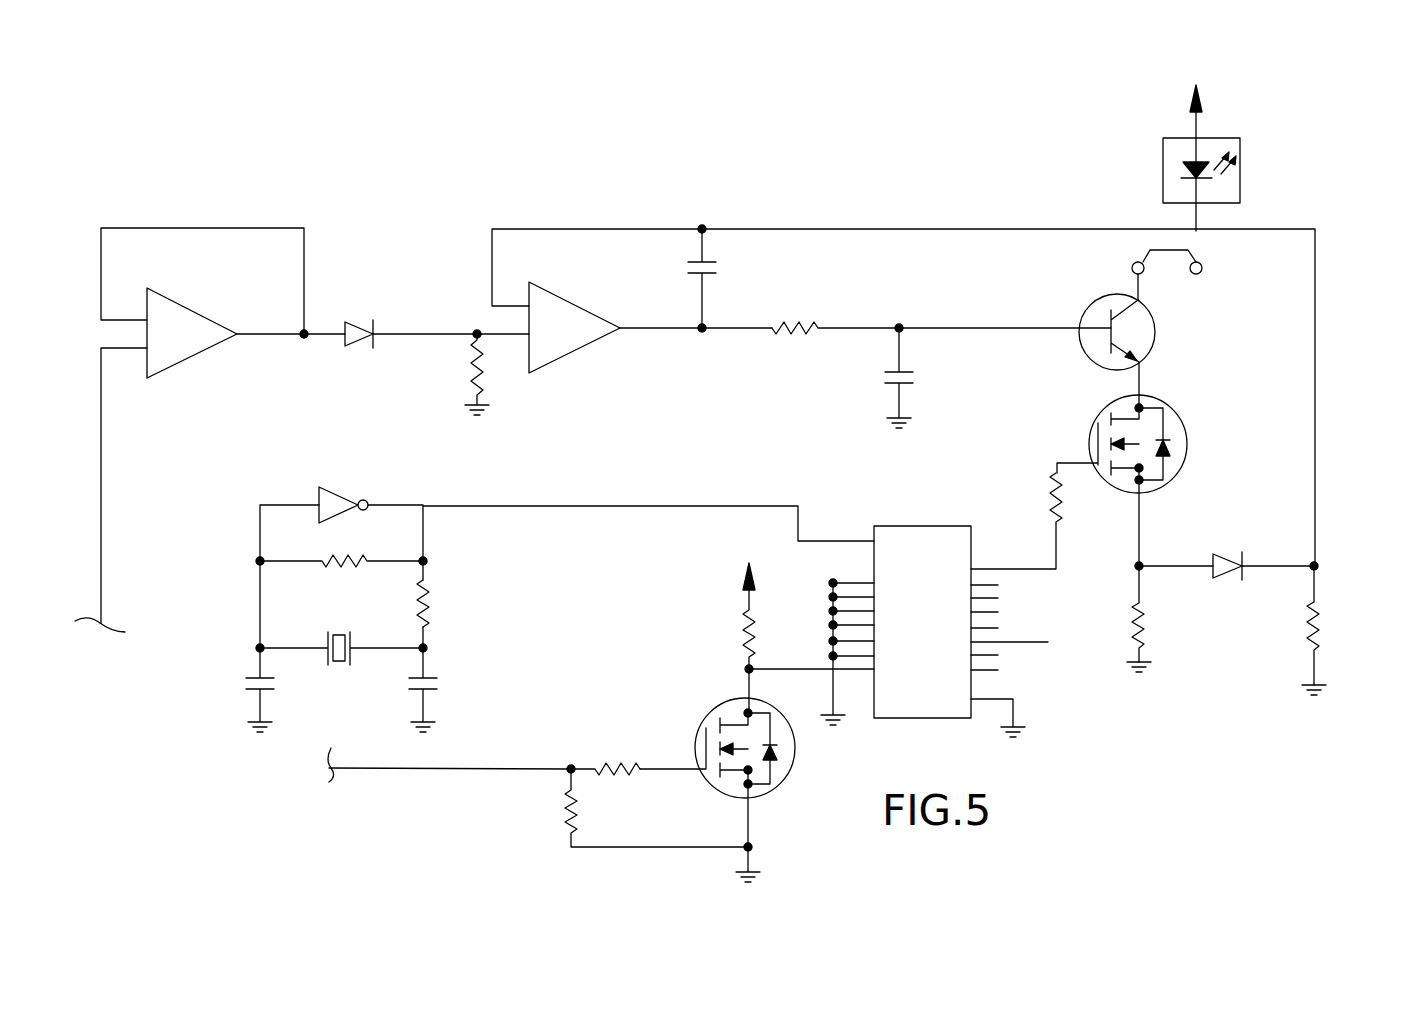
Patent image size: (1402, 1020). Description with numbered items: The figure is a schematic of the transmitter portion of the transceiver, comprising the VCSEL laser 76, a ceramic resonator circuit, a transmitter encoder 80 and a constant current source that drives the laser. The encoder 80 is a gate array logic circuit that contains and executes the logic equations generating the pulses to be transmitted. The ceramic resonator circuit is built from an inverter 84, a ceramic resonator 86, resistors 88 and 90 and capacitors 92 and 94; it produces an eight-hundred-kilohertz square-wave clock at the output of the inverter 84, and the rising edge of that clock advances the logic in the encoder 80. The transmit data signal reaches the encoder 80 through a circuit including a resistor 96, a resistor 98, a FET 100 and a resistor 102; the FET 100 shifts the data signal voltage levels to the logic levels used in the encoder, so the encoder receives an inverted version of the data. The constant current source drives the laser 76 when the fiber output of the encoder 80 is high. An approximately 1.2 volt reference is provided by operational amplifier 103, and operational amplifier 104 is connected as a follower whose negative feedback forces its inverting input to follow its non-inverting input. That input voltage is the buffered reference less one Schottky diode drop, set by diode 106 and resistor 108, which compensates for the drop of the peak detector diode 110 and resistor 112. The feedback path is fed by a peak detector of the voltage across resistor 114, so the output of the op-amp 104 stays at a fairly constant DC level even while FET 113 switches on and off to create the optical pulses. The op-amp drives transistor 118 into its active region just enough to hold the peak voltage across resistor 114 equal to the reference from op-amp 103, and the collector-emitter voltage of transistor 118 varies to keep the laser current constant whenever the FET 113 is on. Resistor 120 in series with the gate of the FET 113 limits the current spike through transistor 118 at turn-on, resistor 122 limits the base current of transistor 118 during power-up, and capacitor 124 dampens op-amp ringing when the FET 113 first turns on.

The VCSEL laser 76 is at (1240, 178).
The transmitter encoder 80 is at (932, 526).
The inverter 84 is at (338, 512).
The ceramic resonator 86 is at (340, 632).
The resistor 88 is at (440, 606).
The resistor 90 is at (348, 554).
The capacitor 92 is at (250, 684).
The capacitor 94 is at (440, 684).
The resistor 96 is at (585, 820).
The resistor 98 is at (615, 762).
The FET 100 is at (751, 790).
The resistor 102 is at (758, 622).
The operational amplifier 103 is at (200, 312).
The operational amplifier 104 is at (582, 355).
The diode 106 is at (358, 347).
The resistor 108 is at (462, 385).
The peak detector diode 110 is at (1232, 580).
The resistor 112 is at (1325, 622).
The FET 113 is at (1180, 468).
The resistor 114 is at (1150, 630).
The transistor 118 is at (1155, 340).
The resistor 120 is at (1063, 505).
The resistor 122 is at (800, 318).
The capacitor 124 is at (918, 376).